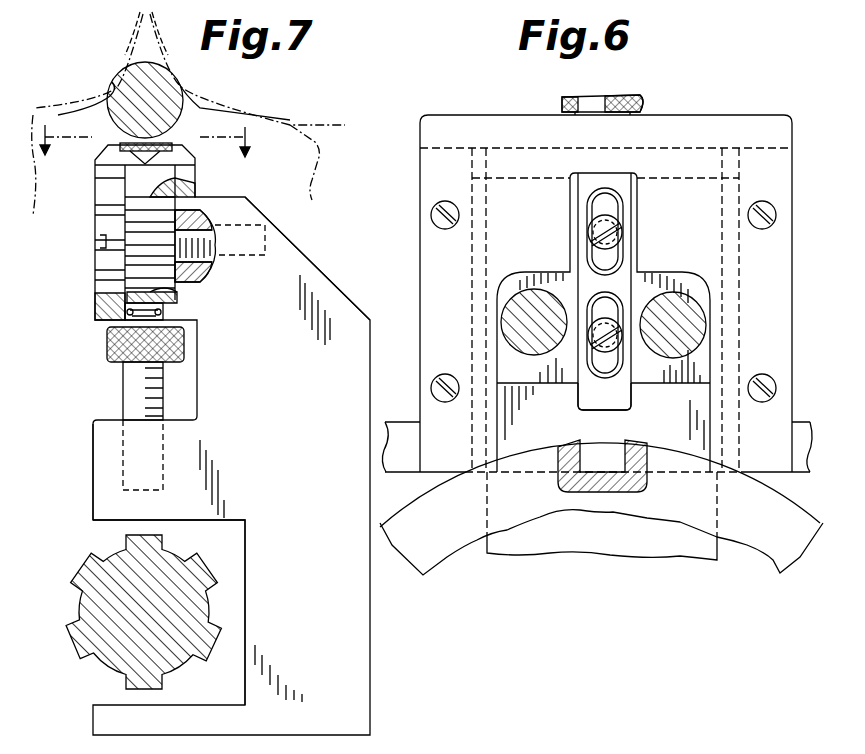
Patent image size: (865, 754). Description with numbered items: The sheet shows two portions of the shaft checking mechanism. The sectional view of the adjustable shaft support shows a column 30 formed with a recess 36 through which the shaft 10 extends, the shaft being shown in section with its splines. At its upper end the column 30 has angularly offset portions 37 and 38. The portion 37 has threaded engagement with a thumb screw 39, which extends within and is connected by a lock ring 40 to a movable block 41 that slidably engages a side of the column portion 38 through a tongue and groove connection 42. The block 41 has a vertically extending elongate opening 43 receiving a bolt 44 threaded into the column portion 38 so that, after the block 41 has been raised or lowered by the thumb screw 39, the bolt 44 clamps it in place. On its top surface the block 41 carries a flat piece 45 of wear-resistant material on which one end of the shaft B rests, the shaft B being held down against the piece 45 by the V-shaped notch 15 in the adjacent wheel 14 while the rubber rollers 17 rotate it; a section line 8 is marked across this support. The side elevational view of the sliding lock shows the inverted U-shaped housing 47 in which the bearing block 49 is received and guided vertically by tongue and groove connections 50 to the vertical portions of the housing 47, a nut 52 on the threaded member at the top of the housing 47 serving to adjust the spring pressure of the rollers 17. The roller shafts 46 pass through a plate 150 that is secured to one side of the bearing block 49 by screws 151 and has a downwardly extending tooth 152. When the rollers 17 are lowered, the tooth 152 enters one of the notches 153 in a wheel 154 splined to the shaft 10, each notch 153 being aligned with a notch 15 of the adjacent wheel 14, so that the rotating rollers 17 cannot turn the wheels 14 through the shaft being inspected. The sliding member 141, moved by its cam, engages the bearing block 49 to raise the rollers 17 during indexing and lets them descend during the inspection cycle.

In FIG. 7, the shaft B is at (120, 83).
In FIG. 7, the section line 8- 8 is at (141, 153).
In FIG. 7, the shaft 10 is at (203, 650).
In FIG. 7, the wheel 14 is at (319, 162).
In FIG. 7, the notch 15 is at (205, 97).
In FIG. 7, the roller 17 is at (135, 40).
In FIG. 7, the column 30 is at (370, 648).
In FIG. 7, the recess 36 is at (238, 548).
In FIG. 7, the column portion 37 is at (93, 461).
In FIG. 7, the column portion 38 is at (330, 300).
In FIG. 7, the thumb screw 39 is at (123, 399).
In FIG. 7, the lock ring 40 is at (108, 322).
In FIG. 7, the movable block 41 is at (95, 312).
In FIG. 7, the tongue and groove connection 42 is at (190, 190).
In FIG. 7, the elongate opening 43 is at (180, 298).
In FIG. 7, the bolt 44 is at (205, 270).
In FIG. 7, the flat piece 45 is at (175, 143).
In FIG. 6, the shaft 46 is at (505, 323).
In FIG. 6, the housing 47 is at (792, 260).
In FIG. 6, the bearing block 49 is at (540, 268).
In FIG. 6, the tongue and groove connection 50 is at (472, 253).
In FIG. 6, the nut 52 is at (646, 101).
In FIG. 6, the sliding member 141 is at (624, 545).
In FIG. 6, the plate 150 is at (622, 190).
In FIG. 6, the screw 151 is at (615, 236).
In FIG. 6, the tooth 152 is at (618, 397).
In FIG. 6, the notch 153 is at (586, 450).
In FIG. 6, the wheel 154 is at (758, 545).